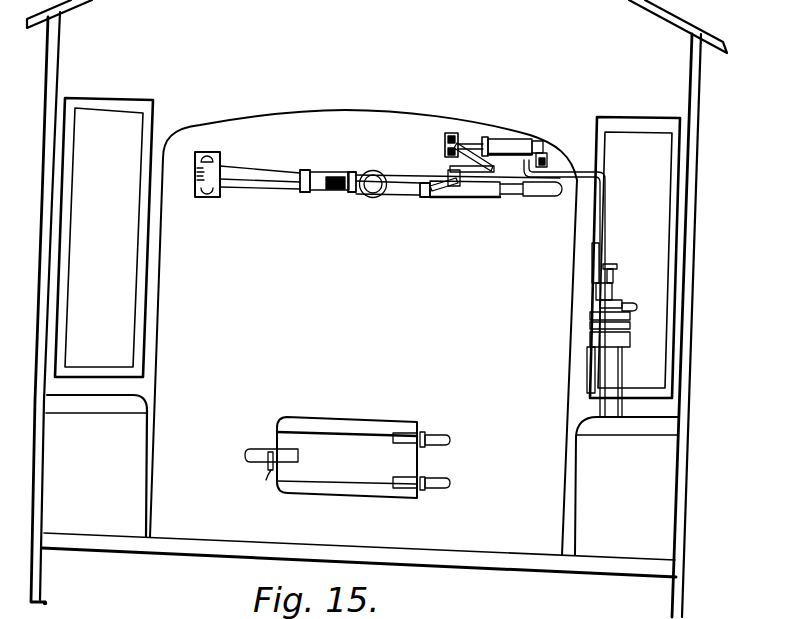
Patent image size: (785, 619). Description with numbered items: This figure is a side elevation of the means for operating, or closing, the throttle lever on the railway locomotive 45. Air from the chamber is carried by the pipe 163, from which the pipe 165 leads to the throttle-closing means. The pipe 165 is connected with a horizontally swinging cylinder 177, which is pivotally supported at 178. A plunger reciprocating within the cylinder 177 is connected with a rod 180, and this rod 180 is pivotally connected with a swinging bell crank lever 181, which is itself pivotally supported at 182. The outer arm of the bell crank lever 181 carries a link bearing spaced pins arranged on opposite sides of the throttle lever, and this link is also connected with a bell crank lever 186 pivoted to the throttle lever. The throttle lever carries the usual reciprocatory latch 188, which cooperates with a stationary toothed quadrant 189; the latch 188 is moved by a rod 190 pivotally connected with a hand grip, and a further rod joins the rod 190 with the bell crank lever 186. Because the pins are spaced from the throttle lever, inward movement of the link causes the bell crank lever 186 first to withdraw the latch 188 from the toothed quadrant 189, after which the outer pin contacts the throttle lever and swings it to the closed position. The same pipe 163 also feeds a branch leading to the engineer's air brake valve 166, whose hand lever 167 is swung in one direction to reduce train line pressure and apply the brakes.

The railway locomotive 45 is at (363, 286).
The pipe 163 is at (618, 279).
The pipe 165 is at (606, 220).
The engineer's air brake valve 166 is at (590, 337).
The hand lever 167 is at (637, 308).
The horizontally swinging cylinder 177 is at (520, 138).
The pivotal support 178 is at (545, 153).
The rod 180 is at (468, 142).
The swinging bell crank lever 181 is at (457, 161).
The pivotal support 182 is at (447, 133).
The bell crank lever 186 is at (334, 173).
The reciprocatory latch 188 is at (320, 189).
The stationary toothed quadrant 189 is at (265, 182).
The rod 190 is at (406, 196).